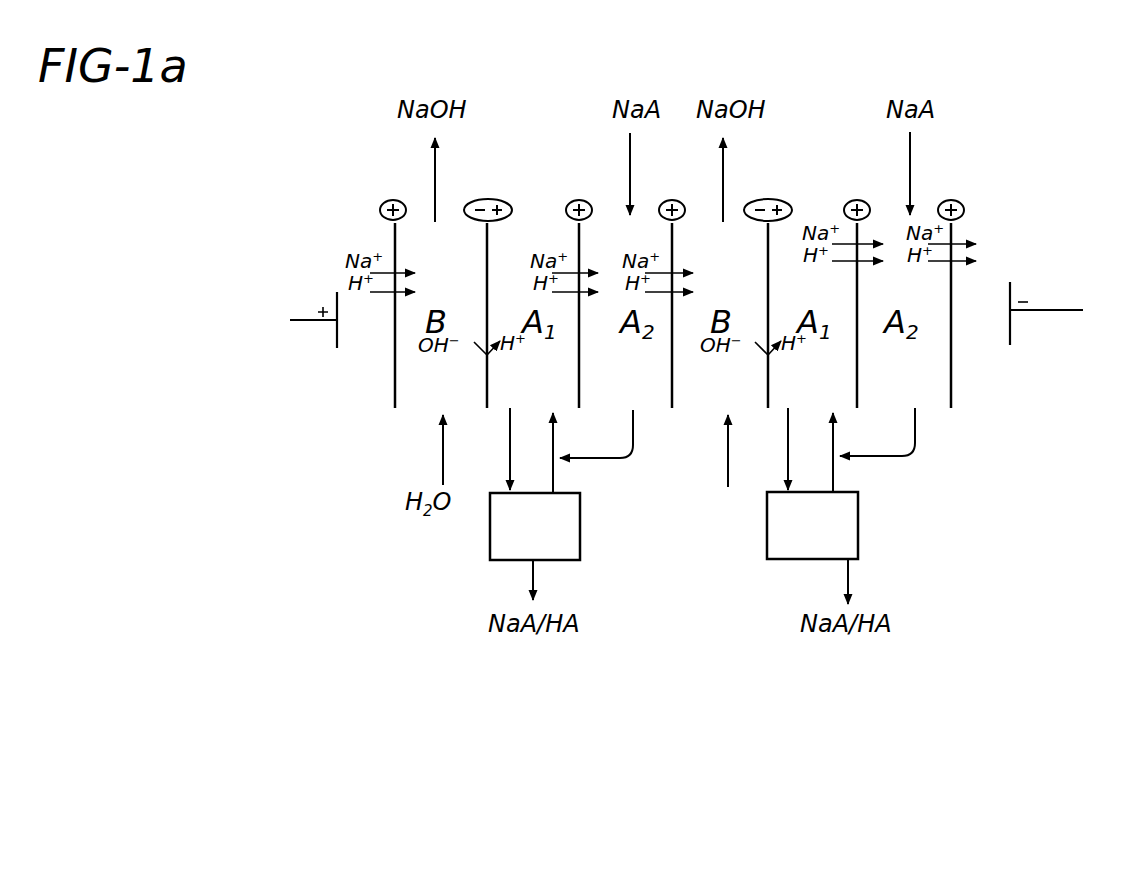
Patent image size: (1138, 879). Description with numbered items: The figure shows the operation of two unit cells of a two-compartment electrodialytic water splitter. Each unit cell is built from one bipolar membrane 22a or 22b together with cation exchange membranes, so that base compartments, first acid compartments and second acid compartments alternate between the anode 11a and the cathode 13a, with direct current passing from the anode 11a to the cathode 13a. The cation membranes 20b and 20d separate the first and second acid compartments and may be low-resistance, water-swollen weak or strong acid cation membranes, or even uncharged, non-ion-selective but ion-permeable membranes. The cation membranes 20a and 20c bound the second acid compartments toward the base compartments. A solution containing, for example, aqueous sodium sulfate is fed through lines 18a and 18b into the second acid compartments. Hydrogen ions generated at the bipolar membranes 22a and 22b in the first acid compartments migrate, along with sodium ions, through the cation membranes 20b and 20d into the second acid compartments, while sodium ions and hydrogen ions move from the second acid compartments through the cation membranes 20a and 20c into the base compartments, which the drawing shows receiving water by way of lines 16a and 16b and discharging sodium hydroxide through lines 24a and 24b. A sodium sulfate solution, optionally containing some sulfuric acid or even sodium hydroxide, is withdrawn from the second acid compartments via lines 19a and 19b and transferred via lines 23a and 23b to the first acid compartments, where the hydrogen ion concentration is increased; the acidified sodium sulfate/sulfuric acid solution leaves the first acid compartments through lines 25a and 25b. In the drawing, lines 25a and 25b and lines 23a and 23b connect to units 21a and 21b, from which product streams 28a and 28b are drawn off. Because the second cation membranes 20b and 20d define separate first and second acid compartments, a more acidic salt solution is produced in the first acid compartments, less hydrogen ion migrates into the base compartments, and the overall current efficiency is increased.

The anode 11a is at (337, 336).
The cathode 13a is at (1012, 336).
The water feed stream 16a is at (443, 447).
The water feed stream 16b is at (728, 456).
The feed solution line 18a is at (630, 160).
The feed solution line 18b is at (910, 160).
The withdrawal line 19a is at (627, 453).
The withdrawal line 19b is at (903, 458).
The cation membrane 20a is at (418, 396).
The cation membrane 20b is at (604, 396).
The cation membrane 20c is at (698, 396).
The cation membrane 20d is at (884, 396).
The mixing vessel 21a is at (580, 533).
The mixing vessel 21b is at (858, 527).
The bipolar membrane 22a is at (516, 393).
The bipolar membrane 22b is at (798, 393).
The transfer line 23a is at (553, 445).
The transfer line 23b is at (833, 467).
The sodium hydroxide product stream 24a is at (435, 160).
The sodium hydroxide product stream 24b is at (723, 160).
The acid withdrawal line 25a is at (510, 447).
The acid withdrawal line 25b is at (788, 459).
The NaA/HA product stream 28a is at (533, 583).
The NaA/HA product stream 28b is at (848, 585).